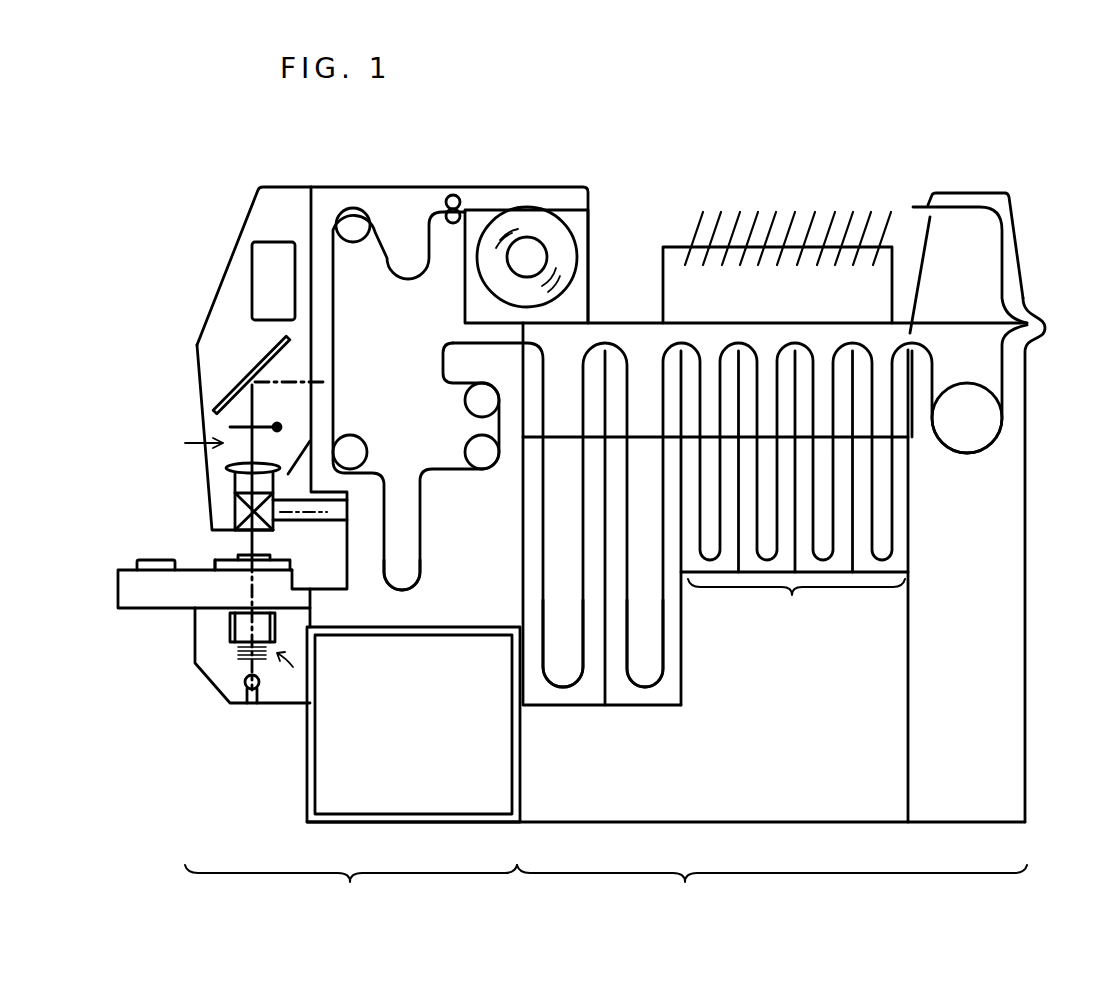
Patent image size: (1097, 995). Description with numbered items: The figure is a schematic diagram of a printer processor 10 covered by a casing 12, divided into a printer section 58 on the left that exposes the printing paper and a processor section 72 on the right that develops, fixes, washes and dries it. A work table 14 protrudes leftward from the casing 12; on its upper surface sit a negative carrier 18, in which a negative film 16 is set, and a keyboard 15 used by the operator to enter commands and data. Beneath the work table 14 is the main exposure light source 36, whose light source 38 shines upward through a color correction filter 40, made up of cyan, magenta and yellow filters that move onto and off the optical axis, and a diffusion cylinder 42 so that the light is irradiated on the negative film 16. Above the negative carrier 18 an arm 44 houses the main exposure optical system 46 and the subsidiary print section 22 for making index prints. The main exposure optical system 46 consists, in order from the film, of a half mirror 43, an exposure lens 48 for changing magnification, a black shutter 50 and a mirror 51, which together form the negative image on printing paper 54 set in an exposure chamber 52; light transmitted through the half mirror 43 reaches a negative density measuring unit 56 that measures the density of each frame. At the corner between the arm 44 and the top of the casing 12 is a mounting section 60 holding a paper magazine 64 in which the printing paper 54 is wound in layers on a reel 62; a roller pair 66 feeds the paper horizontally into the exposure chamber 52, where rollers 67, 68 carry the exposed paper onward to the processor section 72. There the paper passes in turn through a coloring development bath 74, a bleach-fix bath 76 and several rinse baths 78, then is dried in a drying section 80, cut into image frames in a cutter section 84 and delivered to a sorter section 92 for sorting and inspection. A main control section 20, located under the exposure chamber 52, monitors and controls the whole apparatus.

The printer processor 10 is at (648, 144).
The casing 12 is at (400, 187).
The work table 14 is at (127, 596).
The keyboard 15 is at (152, 561).
The negative film 16 is at (250, 556).
The negative carrier 18 is at (227, 573).
The main control section 20 is at (500, 780).
The subsidiary print section 22 is at (252, 240).
The main exposure light source 36 is at (204, 698).
The light source 38 is at (267, 707).
The color correction filter 40 is at (293, 667).
The diffusion cylinder 42 is at (277, 633).
The half mirror 43 is at (235, 504).
The arm 44 is at (238, 358).
The main exposure optical system 46 is at (177, 448).
The exposure lens 48 is at (227, 470).
The black shutter 50 is at (230, 427).
The mirror 51 is at (250, 363).
The exposure chamber 52 is at (395, 335).
The printing paper 54 is at (421, 505).
The negative density measuring unit 56 is at (323, 522).
The printer section 58 is at (351, 893).
The mounting section 60 is at (462, 212).
The reel 62 is at (535, 257).
The paper magazine 64 is at (588, 215).
The roller pair 66 is at (458, 198).
The roller 67 is at (353, 225).
The rollers 68 is at (350, 445).
The processor section 72 is at (740, 623).
The coloring development bath 74 is at (575, 705).
The bleach-fix bath 76 is at (657, 705).
The rinse baths 78 is at (796, 606).
The drying section 80 is at (1025, 690).
The cutter section 84 is at (973, 177).
The sorter section 92 is at (680, 245).